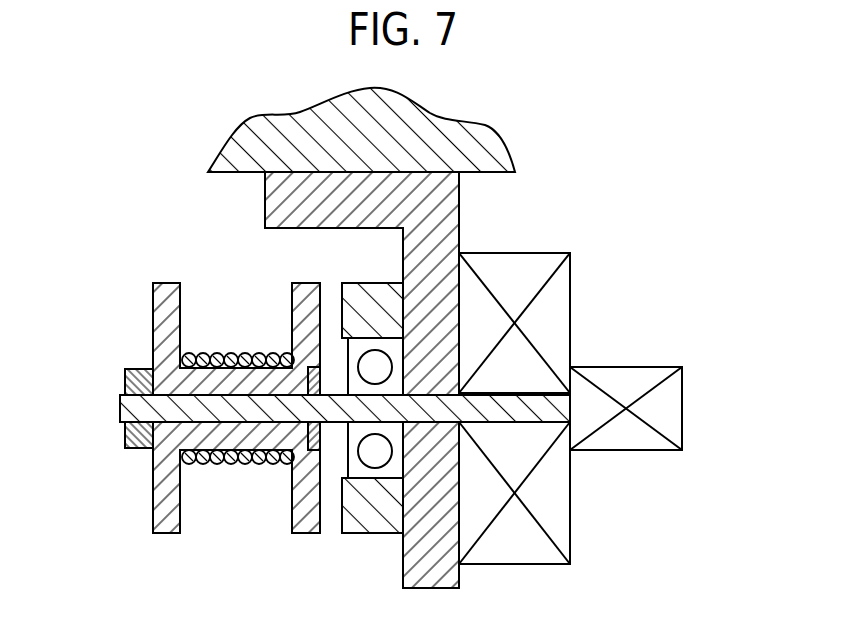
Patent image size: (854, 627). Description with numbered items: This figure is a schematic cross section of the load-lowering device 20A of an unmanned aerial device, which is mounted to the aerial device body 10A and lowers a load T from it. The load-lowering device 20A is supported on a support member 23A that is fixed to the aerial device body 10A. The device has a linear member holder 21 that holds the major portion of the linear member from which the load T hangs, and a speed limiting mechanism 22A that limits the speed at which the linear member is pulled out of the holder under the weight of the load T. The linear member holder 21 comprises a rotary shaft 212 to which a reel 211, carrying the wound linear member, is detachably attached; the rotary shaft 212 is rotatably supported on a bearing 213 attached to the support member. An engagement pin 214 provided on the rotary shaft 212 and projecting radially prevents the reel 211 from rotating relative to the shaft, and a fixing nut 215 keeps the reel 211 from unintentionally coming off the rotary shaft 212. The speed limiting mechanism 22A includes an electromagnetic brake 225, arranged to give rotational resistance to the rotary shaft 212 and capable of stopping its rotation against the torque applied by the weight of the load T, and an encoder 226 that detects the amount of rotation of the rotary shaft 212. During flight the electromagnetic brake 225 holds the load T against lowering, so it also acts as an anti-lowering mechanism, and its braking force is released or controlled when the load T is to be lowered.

The aerial device body 10A is at (238, 122).
The support member 23A is at (265, 195).
The load-lowering device 20A is at (629, 197).
The speed limiting mechanism 22A is at (659, 255).
The linear member holder 21 is at (106, 257).
The reel 211 is at (153, 338).
The rotary shaft 212 is at (120, 405).
The bearing 213 is at (345, 452).
The engagement pin 214 is at (320, 377).
The fixing nut 215 is at (125, 435).
The electromagnetic brake 225 is at (570, 325).
The encoder 226 is at (682, 407).
The load T is at (243, 352).